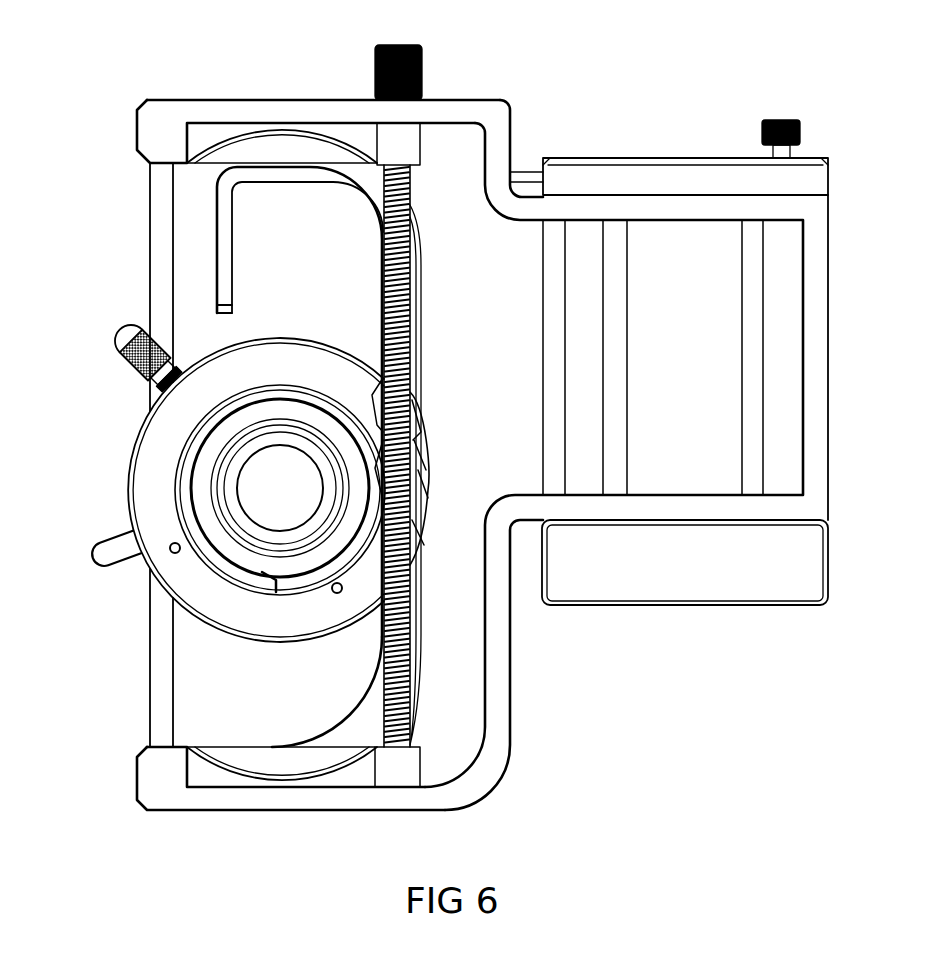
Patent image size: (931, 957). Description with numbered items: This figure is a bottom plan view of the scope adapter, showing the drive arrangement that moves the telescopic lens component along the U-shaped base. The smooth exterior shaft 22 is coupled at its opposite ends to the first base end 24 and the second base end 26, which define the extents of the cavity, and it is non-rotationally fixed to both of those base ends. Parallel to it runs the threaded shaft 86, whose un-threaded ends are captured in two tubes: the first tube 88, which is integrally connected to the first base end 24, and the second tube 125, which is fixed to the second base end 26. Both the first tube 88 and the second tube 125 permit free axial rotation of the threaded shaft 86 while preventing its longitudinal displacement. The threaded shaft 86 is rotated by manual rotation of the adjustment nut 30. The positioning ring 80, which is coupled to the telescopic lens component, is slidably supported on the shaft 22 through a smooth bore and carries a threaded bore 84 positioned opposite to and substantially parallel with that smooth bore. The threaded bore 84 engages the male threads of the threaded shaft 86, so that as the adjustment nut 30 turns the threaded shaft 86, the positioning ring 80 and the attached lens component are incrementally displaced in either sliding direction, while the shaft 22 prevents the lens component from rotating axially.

The smooth exterior shaft 22 is at (160, 255).
The first base end 24 is at (240, 108).
The second base end 26 is at (235, 795).
The adjustment nut 30 is at (375, 72).
The positioning ring 80 is at (155, 462).
The threaded bore 84 is at (424, 468).
The threaded shaft 86 is at (410, 330).
The first tube 88 is at (410, 150).
The second tube 125 is at (410, 765).